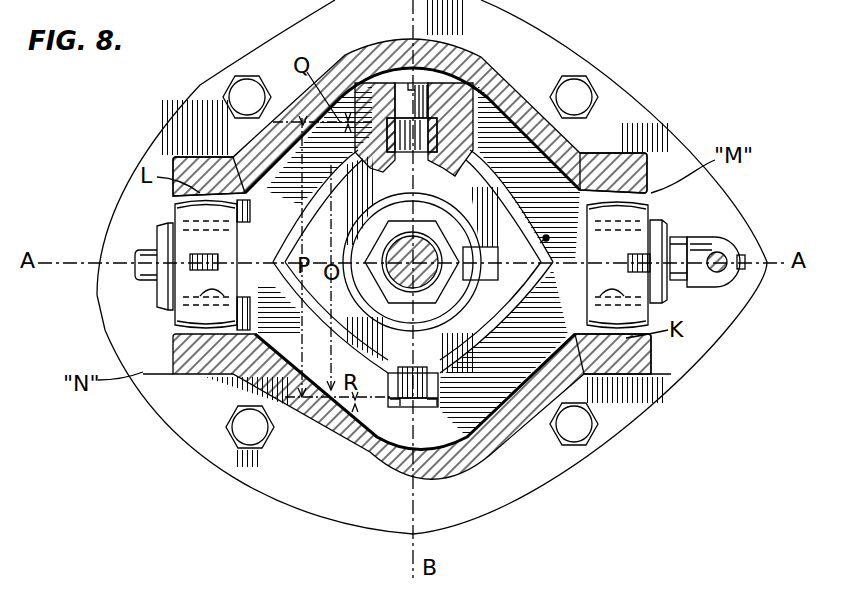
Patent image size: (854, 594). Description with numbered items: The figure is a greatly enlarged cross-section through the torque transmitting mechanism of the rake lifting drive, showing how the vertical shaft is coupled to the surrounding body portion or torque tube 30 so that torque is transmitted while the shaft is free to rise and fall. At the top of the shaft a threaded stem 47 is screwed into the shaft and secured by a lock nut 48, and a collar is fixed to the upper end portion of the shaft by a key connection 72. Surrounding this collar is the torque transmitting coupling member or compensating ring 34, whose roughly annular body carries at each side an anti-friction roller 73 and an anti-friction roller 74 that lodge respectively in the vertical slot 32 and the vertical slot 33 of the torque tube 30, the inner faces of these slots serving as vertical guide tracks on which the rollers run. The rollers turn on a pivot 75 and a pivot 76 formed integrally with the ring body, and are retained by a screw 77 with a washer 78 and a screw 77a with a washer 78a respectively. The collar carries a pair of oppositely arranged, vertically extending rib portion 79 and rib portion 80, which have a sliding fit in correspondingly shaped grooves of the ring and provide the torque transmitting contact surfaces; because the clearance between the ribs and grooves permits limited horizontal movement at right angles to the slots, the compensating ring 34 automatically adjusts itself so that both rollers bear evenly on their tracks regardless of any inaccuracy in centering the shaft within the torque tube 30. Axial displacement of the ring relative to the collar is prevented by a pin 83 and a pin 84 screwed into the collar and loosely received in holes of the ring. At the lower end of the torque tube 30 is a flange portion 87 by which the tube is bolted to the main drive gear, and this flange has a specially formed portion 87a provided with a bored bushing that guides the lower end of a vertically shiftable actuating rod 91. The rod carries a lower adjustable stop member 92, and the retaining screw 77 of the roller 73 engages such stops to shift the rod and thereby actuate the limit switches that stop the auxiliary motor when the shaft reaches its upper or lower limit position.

The torque tube 30 is at (477, 471).
The vertical slot 32 is at (636, 173).
The vertical slot 33 is at (177, 200).
The compensating ring 34 is at (333, 395).
The threaded stem 47 is at (420, 240).
The lock nut 48 is at (430, 301).
The key connection 72 is at (492, 264).
The anti-friction roller 73 is at (618, 265).
The anti-friction roller 74 is at (212, 265).
The pivot 75 is at (657, 214).
The pivot 76 is at (175, 307).
The screw 77 is at (681, 249).
The screw 77a is at (155, 278).
The washer 78 is at (660, 300).
The washer 78a is at (157, 228).
The rib portion 79 is at (404, 158).
The rib portion 80 is at (419, 372).
The pin 83 is at (407, 90).
The pin 84 is at (400, 443).
The flange portion 87 is at (272, 40).
The specially formed portion 87a is at (736, 222).
The actuating rod 91 is at (714, 273).
The lower adjustable stop member 92 is at (722, 248).